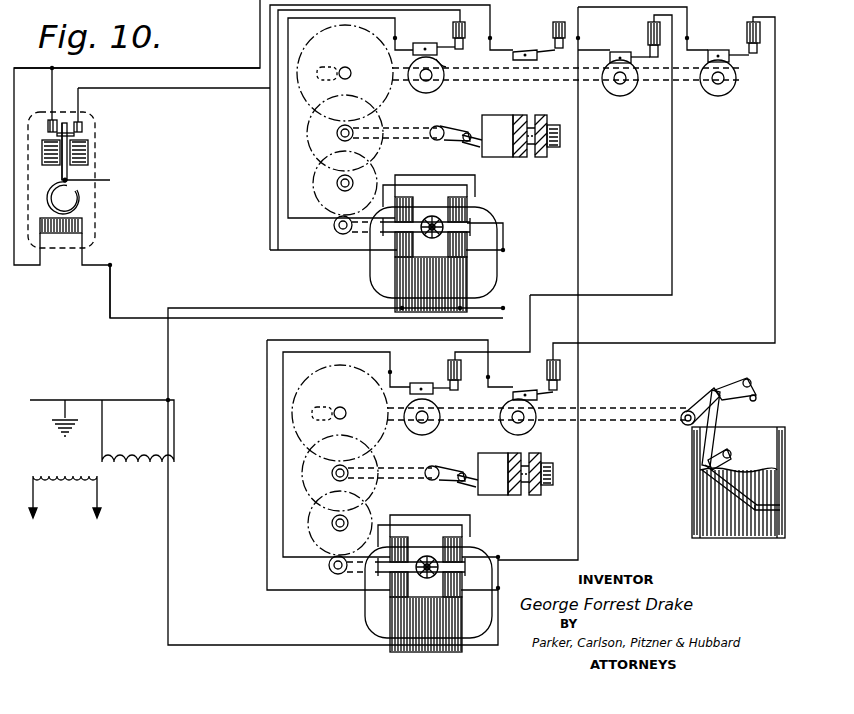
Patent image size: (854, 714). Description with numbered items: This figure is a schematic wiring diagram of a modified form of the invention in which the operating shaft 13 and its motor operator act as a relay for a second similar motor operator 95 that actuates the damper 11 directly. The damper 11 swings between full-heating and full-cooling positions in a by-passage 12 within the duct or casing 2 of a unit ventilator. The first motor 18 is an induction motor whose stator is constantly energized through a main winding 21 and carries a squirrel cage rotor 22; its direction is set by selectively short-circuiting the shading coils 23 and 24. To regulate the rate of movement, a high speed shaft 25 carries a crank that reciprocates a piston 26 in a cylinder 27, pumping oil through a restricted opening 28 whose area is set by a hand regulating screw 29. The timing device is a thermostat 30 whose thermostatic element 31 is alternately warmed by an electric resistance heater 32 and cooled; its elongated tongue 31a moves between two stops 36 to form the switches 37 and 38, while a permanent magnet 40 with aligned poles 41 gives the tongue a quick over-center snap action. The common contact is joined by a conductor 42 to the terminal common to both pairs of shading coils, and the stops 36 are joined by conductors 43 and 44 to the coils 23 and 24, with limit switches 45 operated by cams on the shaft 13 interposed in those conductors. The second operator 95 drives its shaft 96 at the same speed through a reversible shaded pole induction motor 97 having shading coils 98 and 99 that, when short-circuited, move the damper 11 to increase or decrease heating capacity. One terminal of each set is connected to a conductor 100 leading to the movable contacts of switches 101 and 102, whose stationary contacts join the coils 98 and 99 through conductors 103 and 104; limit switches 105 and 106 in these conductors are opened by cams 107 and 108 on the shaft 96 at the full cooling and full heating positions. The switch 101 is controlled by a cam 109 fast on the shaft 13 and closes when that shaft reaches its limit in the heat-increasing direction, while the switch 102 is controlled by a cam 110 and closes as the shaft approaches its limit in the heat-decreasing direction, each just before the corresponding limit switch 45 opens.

The duct or casing 2 is at (690, 529).
The damper 11 is at (762, 428).
The by-passage 12 is at (712, 492).
The operating shaft 13 is at (468, 81).
The electric motor 18 is at (366, 276).
The main winding 21 is at (452, 283).
The rotor 22 is at (435, 215).
The shading coils 23 is at (467, 207).
The shading coils 24 is at (395, 205).
The high speed shaft 25 is at (392, 140).
The piston 26 is at (472, 128).
The cylinder 27 is at (496, 120).
The restricted opening 28 is at (530, 157).
The hand regulating screw 29 is at (552, 148).
The thermostat 30 is at (106, 125).
The thermostatic element 31 is at (81, 201).
The tongue 31a is at (68, 174).
The electric resistance heater 32 is at (63, 235).
The stops 36 is at (48, 118).
The switch 37 is at (74, 136).
The switch 38 is at (65, 122).
The permanent magnet 40 is at (95, 156).
The poles 41 is at (52, 160).
The conductor 42 is at (112, 290).
The conductor 43 is at (205, 89).
The conductor 44 is at (226, 68).
The limit switches 45 is at (452, 40).
The second motor operator 95 is at (482, 511).
The shaft 96 is at (612, 424).
The reversible shaded pole induction motor 97 is at (367, 625).
The shading coils 98 is at (400, 537).
The shading coils 99 is at (452, 537).
The conductor 100 is at (578, 505).
The switch 101 is at (647, 42).
The switch 102 is at (746, 42).
The conductor 103 is at (672, 190).
The conductor 104 is at (775, 248).
The limit switch 105 is at (447, 379).
The limit switch 106 is at (546, 383).
The cam 107 is at (433, 428).
The cam 108 is at (528, 428).
The cam 109 is at (629, 89).
The cam 110 is at (727, 92).